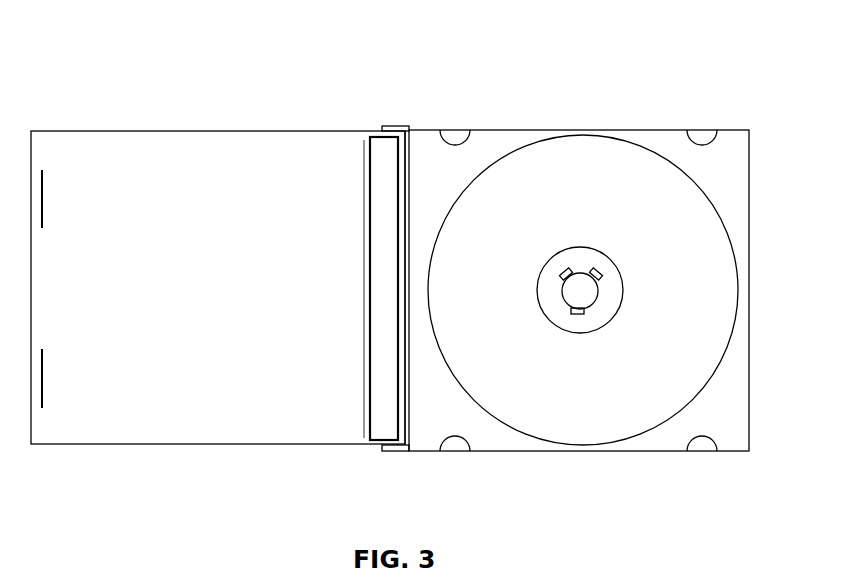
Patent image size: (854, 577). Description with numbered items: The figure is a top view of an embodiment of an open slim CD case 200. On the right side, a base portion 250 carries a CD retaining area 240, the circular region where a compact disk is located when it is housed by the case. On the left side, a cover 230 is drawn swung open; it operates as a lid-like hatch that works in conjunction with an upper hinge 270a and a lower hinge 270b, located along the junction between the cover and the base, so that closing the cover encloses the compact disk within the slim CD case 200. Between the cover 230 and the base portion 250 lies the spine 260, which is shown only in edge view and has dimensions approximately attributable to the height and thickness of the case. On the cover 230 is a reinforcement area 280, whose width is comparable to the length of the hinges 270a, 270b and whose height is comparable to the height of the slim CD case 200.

The slim CD case 200 is at (589, 58).
The cover 230 is at (112, 427).
The CD retaining area 240 is at (615, 177).
The base portion 250 is at (732, 429).
The spine 260 is at (402, 207).
The hinge 270a is at (392, 125).
The hinge 270b is at (395, 452).
The reinforcement area 280 is at (383, 275).